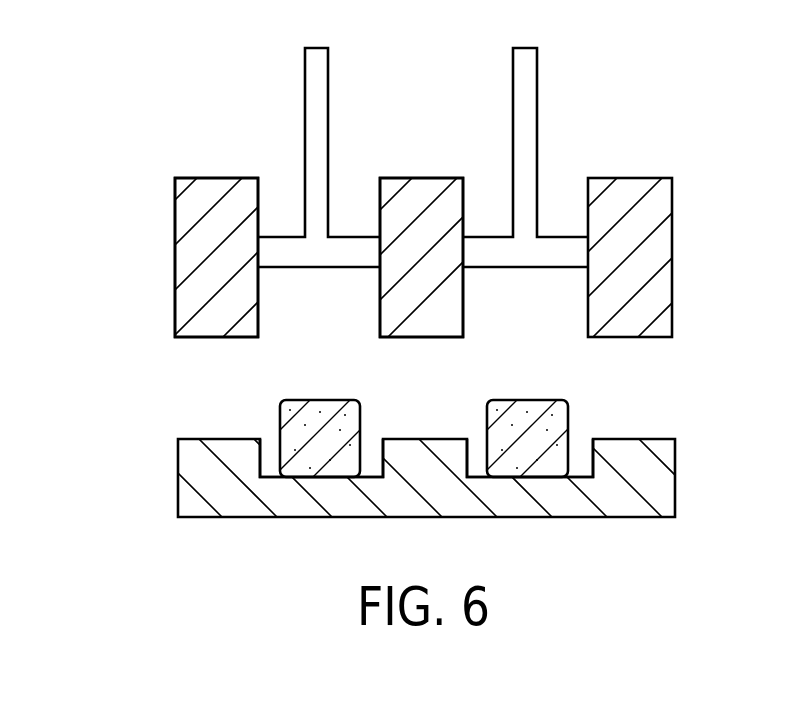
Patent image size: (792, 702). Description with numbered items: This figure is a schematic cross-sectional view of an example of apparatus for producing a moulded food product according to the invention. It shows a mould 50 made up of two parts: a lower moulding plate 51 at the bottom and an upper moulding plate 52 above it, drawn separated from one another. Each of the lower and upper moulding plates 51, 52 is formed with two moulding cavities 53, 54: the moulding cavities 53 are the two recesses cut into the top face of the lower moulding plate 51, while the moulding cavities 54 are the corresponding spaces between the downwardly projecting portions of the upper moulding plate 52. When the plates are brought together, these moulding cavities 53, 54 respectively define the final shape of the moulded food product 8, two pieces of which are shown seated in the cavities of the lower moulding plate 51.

The moulded food product 8 is at (487, 410).
The mould 50 is at (180, 387).
The lower moulding plate 51 is at (178, 490).
The upper moulding plate 52 is at (173, 190).
The moulding cavities 53 is at (262, 457).
The moulding cavities 54 is at (258, 314).